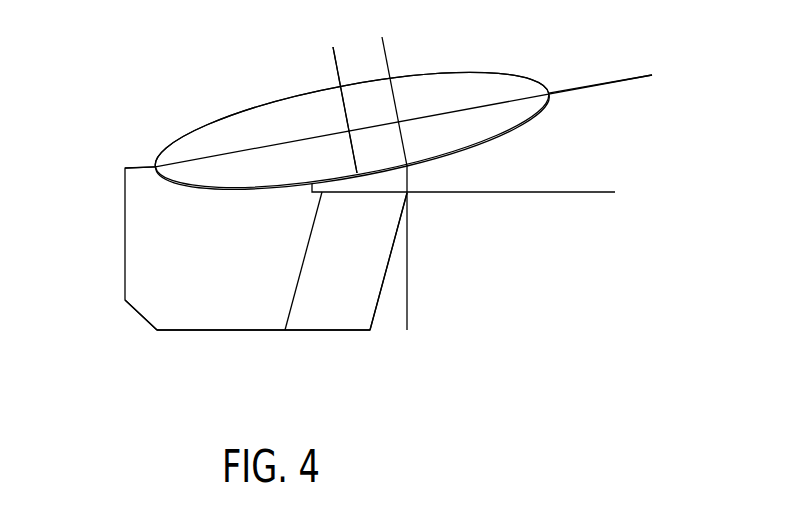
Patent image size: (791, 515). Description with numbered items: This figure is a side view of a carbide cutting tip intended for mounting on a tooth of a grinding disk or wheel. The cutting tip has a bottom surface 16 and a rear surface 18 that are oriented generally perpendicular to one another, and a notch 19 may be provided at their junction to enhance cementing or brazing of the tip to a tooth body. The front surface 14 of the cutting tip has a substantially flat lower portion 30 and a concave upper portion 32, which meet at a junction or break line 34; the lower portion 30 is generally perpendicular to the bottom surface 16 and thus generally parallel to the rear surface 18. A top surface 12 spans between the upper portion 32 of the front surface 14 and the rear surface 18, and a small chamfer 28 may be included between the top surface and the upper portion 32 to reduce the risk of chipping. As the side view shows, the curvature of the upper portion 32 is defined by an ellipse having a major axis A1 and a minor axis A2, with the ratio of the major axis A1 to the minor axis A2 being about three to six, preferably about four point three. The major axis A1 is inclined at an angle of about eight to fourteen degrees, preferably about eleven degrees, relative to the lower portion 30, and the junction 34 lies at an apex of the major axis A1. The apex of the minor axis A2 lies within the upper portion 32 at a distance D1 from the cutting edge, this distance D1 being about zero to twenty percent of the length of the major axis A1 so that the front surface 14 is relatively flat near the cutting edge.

The top surface 12 is at (420, 207).
The front surface 14 is at (170, 130).
The bottom surface 16 is at (113, 237).
The rear surface 18 is at (245, 342).
The notch 19 is at (130, 325).
The chamfer 28 is at (408, 167).
The lower portion 30 is at (134, 166).
The upper portion 32 is at (252, 187).
The junction 34 is at (162, 163).
The major axis A1 is at (427, 117).
The minor axis A2 is at (347, 120).
The distance D1 is at (384, 58).